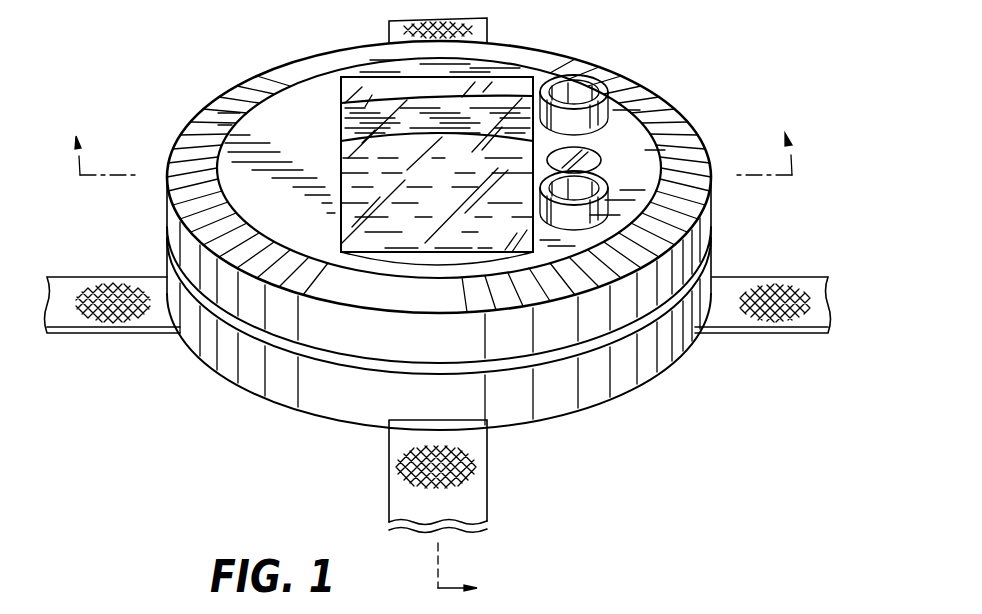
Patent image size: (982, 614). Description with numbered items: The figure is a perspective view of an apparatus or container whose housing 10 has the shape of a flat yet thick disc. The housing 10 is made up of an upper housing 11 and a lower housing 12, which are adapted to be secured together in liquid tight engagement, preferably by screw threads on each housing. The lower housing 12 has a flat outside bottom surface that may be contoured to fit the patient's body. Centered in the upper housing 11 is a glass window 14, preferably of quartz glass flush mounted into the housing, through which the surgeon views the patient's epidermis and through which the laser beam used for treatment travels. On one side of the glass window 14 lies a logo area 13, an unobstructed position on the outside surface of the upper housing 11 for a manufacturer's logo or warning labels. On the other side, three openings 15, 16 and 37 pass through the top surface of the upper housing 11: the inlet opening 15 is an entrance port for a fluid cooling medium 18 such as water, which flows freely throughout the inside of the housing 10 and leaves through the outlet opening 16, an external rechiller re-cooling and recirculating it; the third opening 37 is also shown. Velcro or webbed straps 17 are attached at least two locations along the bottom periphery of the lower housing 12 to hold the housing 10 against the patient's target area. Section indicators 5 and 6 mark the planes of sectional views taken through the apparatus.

The housing 10 is at (190, 8).
The upper housing 11 is at (706, 202).
The lower housing 12 is at (627, 373).
The logo area 13 is at (284, 101).
The glass window 14 is at (500, 84).
The inlet opening 15 is at (596, 82).
The outlet opening 16 is at (662, 153).
The straps 17 is at (388, 33).
The fluid cooling medium 18 is at (455, 190).
The opening 37 is at (603, 150).
The section line 5- 5 is at (429, 142).
The section line 6- 6 is at (465, 574).